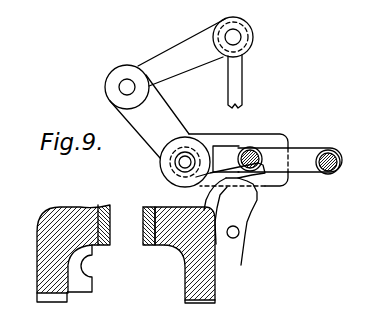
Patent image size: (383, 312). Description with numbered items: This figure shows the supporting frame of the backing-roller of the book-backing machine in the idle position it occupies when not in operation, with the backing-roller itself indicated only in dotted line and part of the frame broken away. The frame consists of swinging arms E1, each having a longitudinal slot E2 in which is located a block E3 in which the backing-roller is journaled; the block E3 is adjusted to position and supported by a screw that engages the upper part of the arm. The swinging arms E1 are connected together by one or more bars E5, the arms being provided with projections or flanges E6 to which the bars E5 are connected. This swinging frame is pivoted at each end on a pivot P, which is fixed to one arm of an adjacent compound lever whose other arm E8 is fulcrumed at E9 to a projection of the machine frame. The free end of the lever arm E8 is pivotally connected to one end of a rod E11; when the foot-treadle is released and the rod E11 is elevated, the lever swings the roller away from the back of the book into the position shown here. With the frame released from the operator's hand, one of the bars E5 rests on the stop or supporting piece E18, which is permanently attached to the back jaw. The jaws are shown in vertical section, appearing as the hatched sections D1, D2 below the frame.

The fulcrum E9 is at (127, 85).
The lever arm E8 is at (181, 52).
The rod E11 is at (235, 70).
The swinging arm E1 is at (290, 136).
The longitudinal slot E2 is at (217, 150).
The bar E5 is at (253, 150).
The projection or flange E6 is at (324, 170).
The block E3 is at (174, 172).
The pivot P is at (176, 161).
The stop or supporting piece E18 is at (227, 208).
The guide block section D1 is at (65, 199).
The guide block section D2 is at (165, 238).